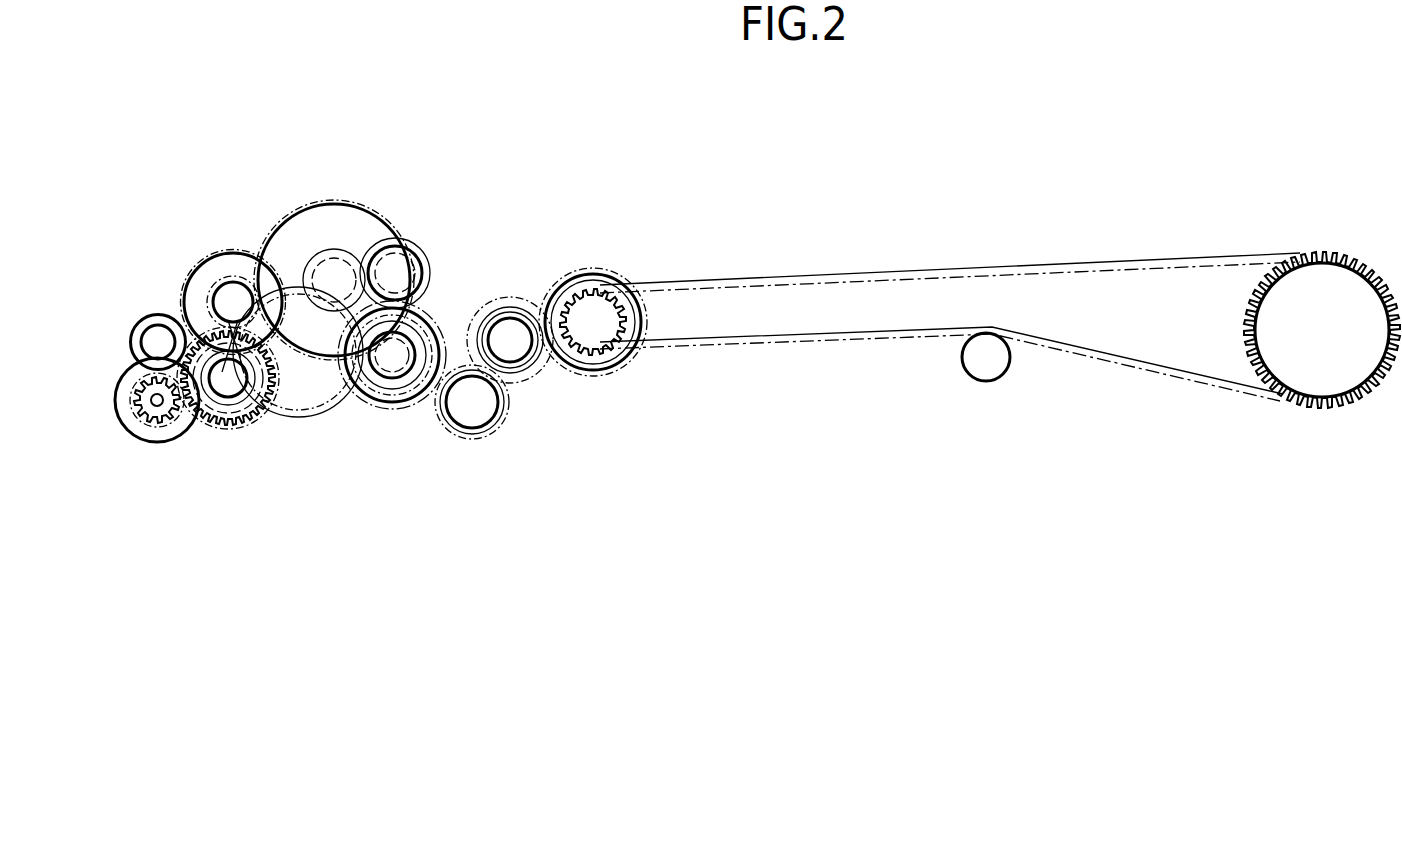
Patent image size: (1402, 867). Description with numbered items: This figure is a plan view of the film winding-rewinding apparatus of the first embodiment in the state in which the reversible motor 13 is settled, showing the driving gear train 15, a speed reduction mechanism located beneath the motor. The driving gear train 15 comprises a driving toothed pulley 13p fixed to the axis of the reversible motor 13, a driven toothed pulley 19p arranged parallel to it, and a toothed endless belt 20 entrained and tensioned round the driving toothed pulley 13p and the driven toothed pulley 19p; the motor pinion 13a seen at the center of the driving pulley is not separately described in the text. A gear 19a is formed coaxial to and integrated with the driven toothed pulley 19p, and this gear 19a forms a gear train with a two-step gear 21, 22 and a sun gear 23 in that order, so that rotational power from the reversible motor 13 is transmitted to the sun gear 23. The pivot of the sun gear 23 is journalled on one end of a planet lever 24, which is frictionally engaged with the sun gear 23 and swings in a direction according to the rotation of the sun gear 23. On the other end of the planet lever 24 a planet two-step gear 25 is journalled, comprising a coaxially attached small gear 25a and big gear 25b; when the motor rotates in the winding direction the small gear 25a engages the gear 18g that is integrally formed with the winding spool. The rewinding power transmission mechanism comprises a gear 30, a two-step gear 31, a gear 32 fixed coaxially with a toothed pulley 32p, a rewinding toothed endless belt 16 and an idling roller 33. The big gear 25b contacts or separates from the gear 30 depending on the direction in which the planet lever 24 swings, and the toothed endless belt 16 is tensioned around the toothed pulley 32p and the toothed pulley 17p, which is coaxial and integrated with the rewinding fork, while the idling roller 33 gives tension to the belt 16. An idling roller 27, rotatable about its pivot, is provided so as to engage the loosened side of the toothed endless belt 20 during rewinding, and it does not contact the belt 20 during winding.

The reversible motor 13 is at (153, 445).
The motor pinion gear 13a is at (143, 420).
The driving toothed pulley 13p is at (183, 417).
The driving gear train 15 is at (418, 186).
The rewinding toothed endless belt 16 is at (1108, 366).
The toothed pulley 17p is at (1323, 392).
The gear 18g is at (318, 402).
The gear 19a is at (230, 380).
The driven toothed pulley 19p is at (277, 406).
The toothed endless belt 20 is at (220, 430).
The two-step gear 21 is at (223, 265).
The two-step gear 22 is at (339, 222).
The sun gear 23 is at (422, 258).
The planet lever 24 is at (428, 281).
The planet two-step gear 25 is at (470, 447).
The small gear 25a is at (412, 398).
The big gear 25b is at (395, 400).
The idling roller 27 is at (153, 315).
The gear 30 is at (488, 401).
The two-step gear 31 is at (522, 352).
The gear 32 is at (622, 268).
The toothed pulley 32p is at (605, 348).
The idling roller 33 is at (988, 368).